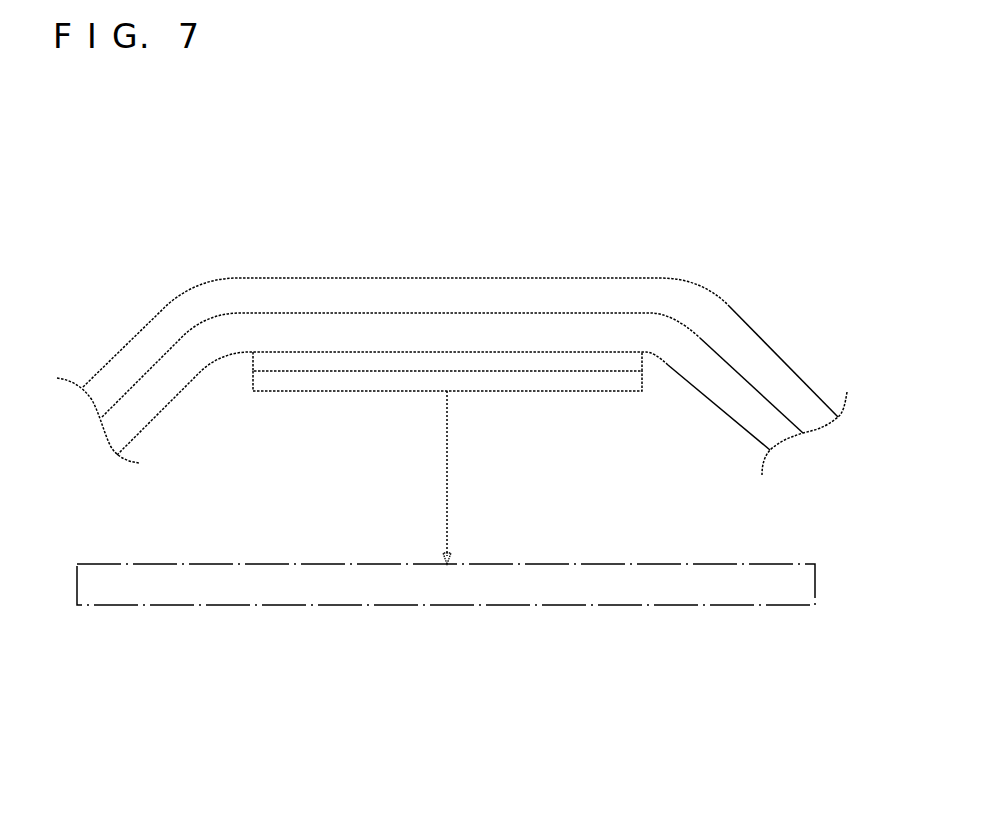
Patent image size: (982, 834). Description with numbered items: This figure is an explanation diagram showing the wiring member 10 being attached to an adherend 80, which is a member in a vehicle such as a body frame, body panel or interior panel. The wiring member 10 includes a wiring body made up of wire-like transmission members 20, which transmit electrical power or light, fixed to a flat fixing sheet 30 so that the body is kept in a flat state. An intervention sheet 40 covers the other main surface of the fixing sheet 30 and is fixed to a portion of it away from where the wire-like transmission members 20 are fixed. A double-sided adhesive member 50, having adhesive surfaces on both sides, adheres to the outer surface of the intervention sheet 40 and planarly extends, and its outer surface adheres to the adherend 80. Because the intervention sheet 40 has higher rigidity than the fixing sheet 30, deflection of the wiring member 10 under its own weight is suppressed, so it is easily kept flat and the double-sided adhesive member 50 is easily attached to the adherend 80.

The wiring member 10 is at (308, 202).
The wire-like transmission member 20 is at (517, 292).
The fixing sheet 30 is at (668, 343).
The intervention sheet 40 is at (512, 363).
The double-sided adhesive member 50 is at (572, 380).
The adherend 80 is at (551, 606).